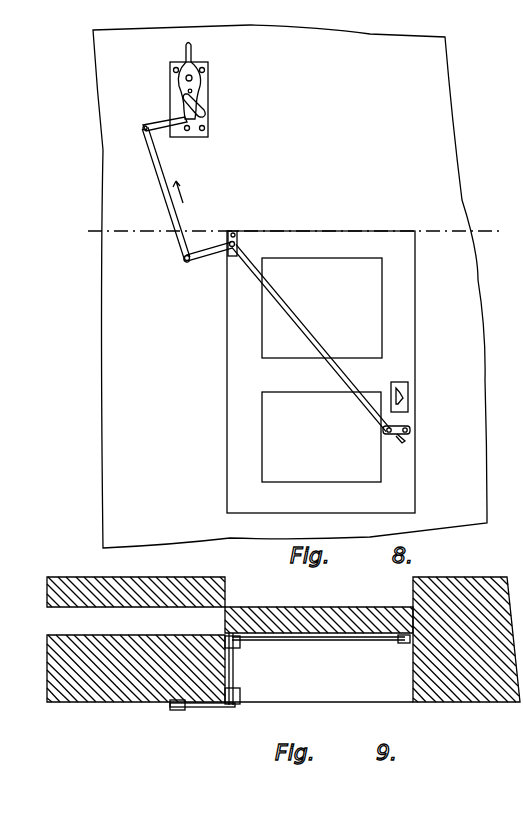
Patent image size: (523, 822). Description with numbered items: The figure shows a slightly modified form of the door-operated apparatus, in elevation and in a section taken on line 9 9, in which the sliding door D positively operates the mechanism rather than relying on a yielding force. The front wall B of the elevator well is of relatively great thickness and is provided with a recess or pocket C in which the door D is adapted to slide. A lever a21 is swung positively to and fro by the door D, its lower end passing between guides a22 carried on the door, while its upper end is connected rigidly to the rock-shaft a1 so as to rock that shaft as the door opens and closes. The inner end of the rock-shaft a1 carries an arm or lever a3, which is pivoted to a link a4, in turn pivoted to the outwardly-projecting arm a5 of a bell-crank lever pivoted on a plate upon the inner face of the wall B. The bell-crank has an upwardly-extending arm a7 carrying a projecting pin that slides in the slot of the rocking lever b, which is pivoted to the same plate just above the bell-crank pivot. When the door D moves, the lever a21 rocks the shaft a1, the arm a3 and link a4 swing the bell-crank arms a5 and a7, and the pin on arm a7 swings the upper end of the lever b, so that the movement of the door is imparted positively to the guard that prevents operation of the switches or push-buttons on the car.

In FIG. 8, the section line 9 9 is at (257, 233).
In FIG. 8, the door D is at (353, 256).
In FIG. 9, the door D is at (297, 605).
In FIG. 8, the rocking lever b is at (197, 62).
In FIG. 8, the upwardly-extending arm of the bell-crank lever a7 is at (206, 103).
In FIG. 8, the outwardly-projecting arm of the bell-crank lever a5 is at (144, 126).
In FIG. 8, the link a4 is at (164, 174).
In FIG. 8, the arm or lever a3 is at (211, 257).
In FIG. 9, the arm or lever a3 is at (221, 706).
In FIG. 8, the rock-shaft a1 is at (238, 233).
In FIG. 8, the lever a21 is at (310, 333).
In FIG. 9, the lever a21 is at (322, 641).
In FIG. 8, the guides a22 is at (387, 434).
In FIG. 9, the front wall B is at (118, 688).
In FIG. 9, the recess or pocket C is at (136, 621).